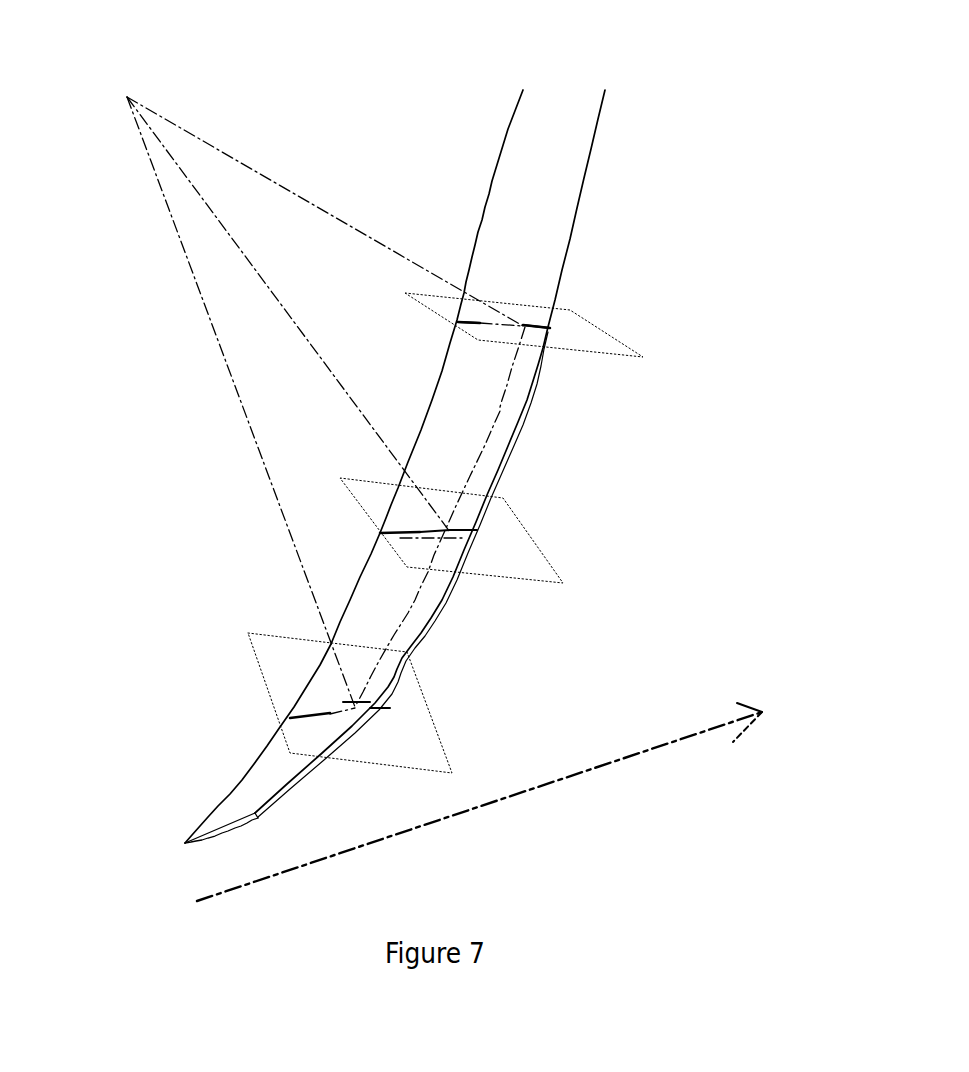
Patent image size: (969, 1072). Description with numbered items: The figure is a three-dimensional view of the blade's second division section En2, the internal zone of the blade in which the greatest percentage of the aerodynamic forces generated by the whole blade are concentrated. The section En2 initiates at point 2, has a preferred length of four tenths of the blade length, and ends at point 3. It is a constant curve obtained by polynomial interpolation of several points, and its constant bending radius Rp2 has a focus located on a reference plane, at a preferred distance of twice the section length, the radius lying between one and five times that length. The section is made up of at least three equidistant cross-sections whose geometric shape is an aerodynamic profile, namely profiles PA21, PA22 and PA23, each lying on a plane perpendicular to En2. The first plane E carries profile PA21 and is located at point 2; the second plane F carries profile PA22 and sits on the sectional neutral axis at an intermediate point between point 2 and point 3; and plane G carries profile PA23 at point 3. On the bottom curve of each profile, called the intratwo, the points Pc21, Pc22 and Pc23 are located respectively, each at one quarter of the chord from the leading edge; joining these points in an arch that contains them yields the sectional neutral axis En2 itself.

The point 2 is at (395, 466).
The point 3 is at (608, 260).
The constant bending radius Rp2 is at (279, 402).
The second division section En2 is at (558, 517).
The plane G is at (620, 313).
The second plane F is at (470, 530).
The first plane E is at (390, 703).
The aerodynamic profile PA23 is at (414, 219).
The point Pc23 is at (619, 222).
The aerodynamic profile PA22 is at (262, 453).
The point Pc22 is at (416, 426).
The aerodynamic profile PA21 is at (188, 610).
The point Pc21 is at (225, 774).